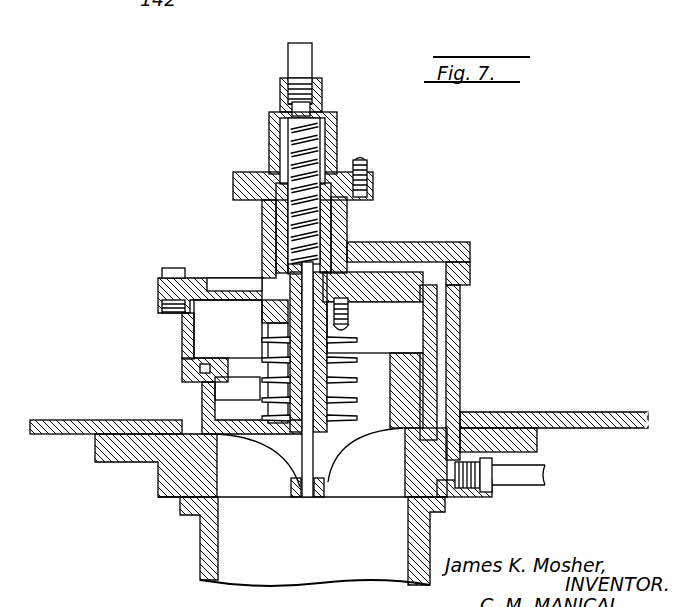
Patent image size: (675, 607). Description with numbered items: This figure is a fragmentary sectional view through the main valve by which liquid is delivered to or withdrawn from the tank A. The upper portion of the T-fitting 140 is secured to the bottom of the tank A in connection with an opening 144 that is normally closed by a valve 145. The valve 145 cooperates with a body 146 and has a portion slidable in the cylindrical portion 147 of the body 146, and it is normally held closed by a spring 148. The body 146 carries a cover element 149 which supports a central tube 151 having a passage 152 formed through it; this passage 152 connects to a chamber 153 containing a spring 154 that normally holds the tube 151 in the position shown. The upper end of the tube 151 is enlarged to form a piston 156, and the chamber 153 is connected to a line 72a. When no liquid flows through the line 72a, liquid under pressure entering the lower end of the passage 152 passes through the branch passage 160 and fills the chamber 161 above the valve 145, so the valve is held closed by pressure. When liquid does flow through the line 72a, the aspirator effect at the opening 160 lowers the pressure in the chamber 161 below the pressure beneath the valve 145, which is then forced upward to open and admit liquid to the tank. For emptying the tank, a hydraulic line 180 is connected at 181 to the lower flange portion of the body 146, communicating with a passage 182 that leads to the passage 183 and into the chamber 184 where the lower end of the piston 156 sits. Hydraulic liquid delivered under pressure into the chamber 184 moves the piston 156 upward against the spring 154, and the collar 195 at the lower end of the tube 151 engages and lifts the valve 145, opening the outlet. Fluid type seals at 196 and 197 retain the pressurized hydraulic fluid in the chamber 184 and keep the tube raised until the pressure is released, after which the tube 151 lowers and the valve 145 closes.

The line 72a is at (300, 55).
The chamber 153 is at (340, 166).
The spring 154 is at (328, 128).
The seal 196 is at (265, 212).
The piston 156 is at (286, 258).
The seal 197 is at (285, 271).
The chamber 184 is at (334, 239).
The passage 183 is at (389, 266).
The passage 182 is at (440, 338).
The passage 152 is at (336, 262).
The chamber 161 is at (397, 333).
The cover element 149 is at (206, 282).
The body 146 is at (184, 332).
The cylindrical portion 147 is at (196, 341).
The spring 148 is at (260, 358).
The valve 145 is at (204, 406).
The tank A is at (598, 412).
The opening 144 is at (218, 478).
The connection 181 is at (481, 456).
The hydraulic line 180 is at (544, 470).
The T-fitting 140 is at (209, 556).
The central tube 151 is at (322, 468).
The collar 195 is at (300, 494).
The branch passage 160 is at (343, 410).